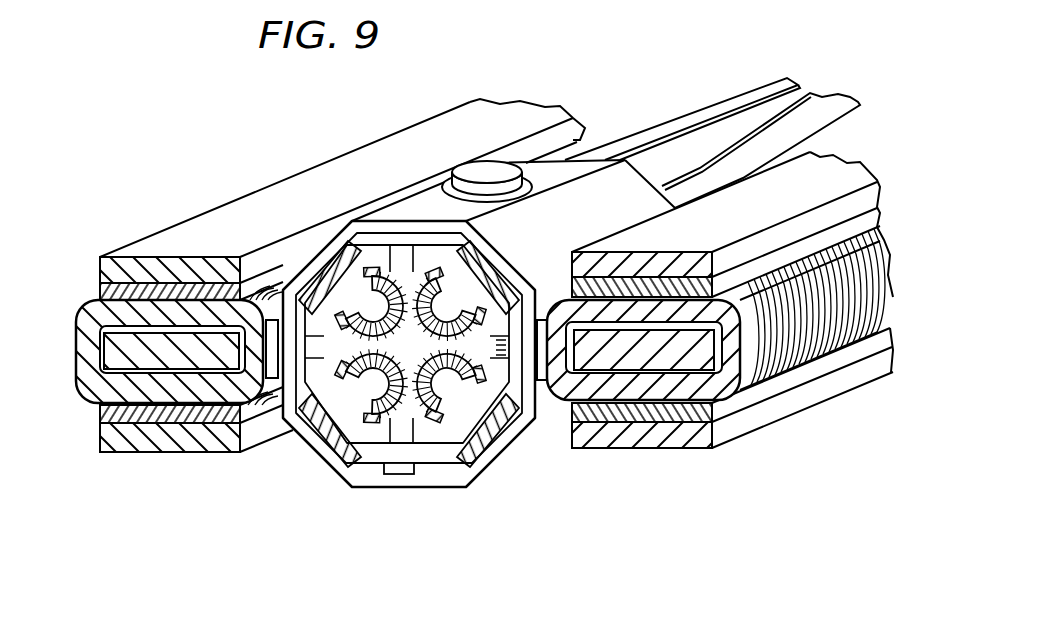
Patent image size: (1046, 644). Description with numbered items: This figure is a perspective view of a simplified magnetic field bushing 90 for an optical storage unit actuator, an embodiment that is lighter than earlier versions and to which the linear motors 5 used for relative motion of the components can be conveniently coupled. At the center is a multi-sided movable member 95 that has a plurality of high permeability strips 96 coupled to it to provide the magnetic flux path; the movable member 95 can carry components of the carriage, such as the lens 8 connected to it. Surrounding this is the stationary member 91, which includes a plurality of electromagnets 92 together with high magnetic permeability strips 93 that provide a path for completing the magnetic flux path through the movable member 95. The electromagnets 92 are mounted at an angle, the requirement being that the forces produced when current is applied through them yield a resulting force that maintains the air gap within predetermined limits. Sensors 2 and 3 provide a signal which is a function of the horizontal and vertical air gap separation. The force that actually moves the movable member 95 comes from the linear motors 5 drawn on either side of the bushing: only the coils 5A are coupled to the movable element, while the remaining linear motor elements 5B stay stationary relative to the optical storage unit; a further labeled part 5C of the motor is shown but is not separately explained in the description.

The sensor 2 is at (272, 428).
The sensor 3 is at (395, 478).
The linear motor 5 is at (190, 213).
The coil 5A is at (77, 362).
The linear motor element 5B is at (100, 265).
The core bar 5C is at (180, 353).
The lens 8 is at (481, 163).
The magnetic field bushing 90 is at (574, 159).
The stationary member 91 is at (420, 435).
The electromagnet 92 is at (452, 305).
The high magnetic permeability strip 93 is at (733, 102).
The movable member 95 is at (407, 486).
The high permeability strip 96 is at (325, 433).